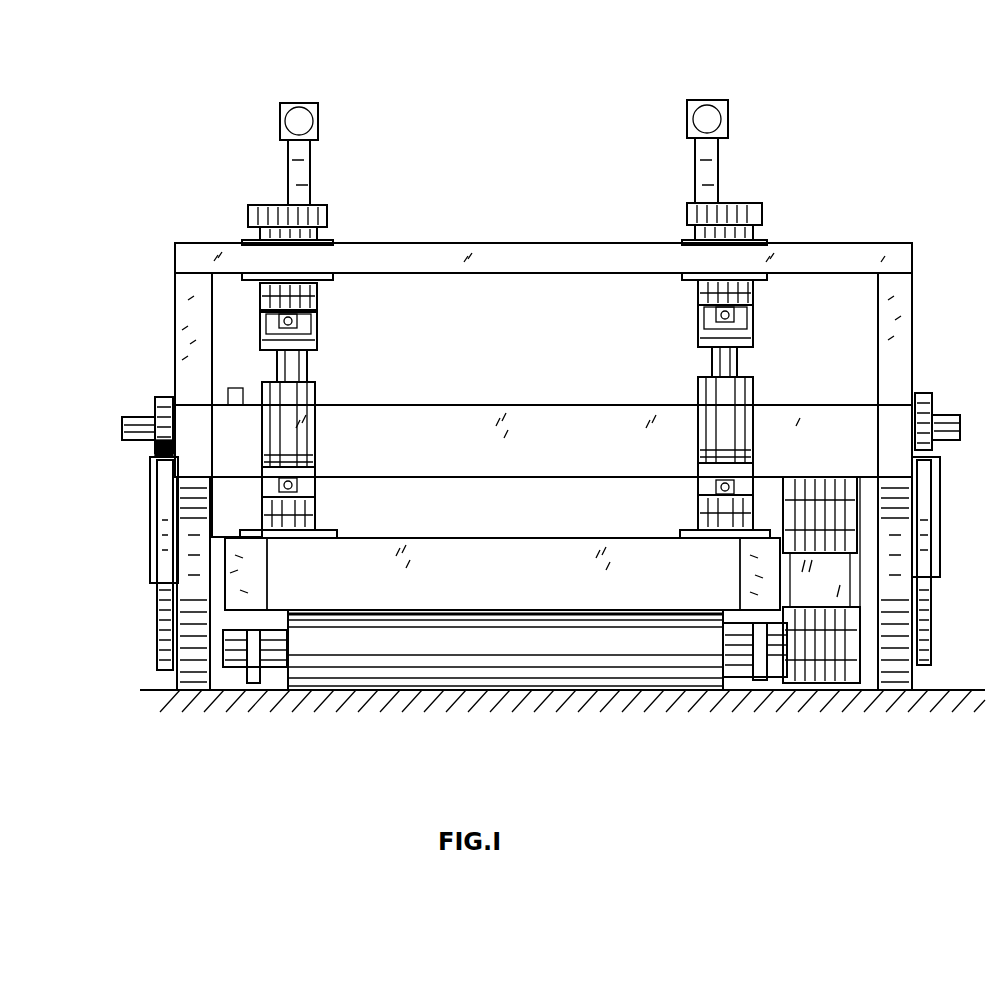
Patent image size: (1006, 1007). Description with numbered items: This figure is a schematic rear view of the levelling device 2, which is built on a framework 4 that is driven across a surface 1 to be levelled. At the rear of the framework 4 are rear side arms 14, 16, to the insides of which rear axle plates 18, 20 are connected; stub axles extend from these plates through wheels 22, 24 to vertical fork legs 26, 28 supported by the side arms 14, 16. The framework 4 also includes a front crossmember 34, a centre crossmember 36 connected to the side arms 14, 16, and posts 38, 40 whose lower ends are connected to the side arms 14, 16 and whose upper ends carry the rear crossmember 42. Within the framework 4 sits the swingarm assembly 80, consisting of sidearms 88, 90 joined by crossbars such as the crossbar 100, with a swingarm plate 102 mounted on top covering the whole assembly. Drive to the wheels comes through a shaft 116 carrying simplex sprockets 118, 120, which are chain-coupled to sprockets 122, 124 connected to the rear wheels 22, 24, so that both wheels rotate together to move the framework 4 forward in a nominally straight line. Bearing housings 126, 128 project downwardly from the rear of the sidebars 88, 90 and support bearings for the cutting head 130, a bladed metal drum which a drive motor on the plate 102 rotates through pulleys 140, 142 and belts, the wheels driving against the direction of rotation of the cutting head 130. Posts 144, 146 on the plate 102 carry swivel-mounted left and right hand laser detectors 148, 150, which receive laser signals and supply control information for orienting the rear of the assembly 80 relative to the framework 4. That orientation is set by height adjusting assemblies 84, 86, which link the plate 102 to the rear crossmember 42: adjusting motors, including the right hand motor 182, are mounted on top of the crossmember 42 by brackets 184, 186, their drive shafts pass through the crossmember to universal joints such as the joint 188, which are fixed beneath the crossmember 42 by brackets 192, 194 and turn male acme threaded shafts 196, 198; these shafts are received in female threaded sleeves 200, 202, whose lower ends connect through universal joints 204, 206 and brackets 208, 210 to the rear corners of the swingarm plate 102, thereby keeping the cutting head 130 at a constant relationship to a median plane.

The surface 1 is at (157, 695).
The levelling device 2 is at (458, 86).
The framework 4 is at (524, 166).
The rear side arm 14 is at (160, 455).
The rear side arm 16 is at (930, 440).
The rear axle plate 18 is at (226, 528).
The rear axle plate 20 is at (860, 480).
The wheel 22 is at (175, 662).
The wheel 24 is at (912, 670).
The vertical fork leg 26 is at (148, 520).
The vertical fork leg 28 is at (940, 520).
The front crossmember 34 is at (915, 625).
The centre crossmember 36 is at (478, 401).
The post 38 is at (175, 304).
The post 40 is at (912, 306).
The rear crossmember 42 is at (912, 255).
The swingarm assembly 80 is at (437, 492).
The height adjusting assembly 84 is at (410, 313).
The height adjusting assembly 86 is at (598, 309).
The sidearm 88 is at (267, 583).
The sidearm 90 is at (740, 581).
The crossbar 100 is at (540, 580).
The swingarm plate 102 is at (527, 538).
The shaft 116 is at (122, 430).
The simplex sprocket 118 is at (155, 405).
The simplex sprocket 120 is at (930, 410).
The sprocket 122 is at (160, 614).
The sprocket 124 is at (930, 598).
The bearing housing 126 is at (242, 690).
The bearing housing 128 is at (734, 690).
The cutting head 130 is at (512, 708).
The pulley 140 is at (820, 580).
The pulley 142 is at (795, 690).
The post 144 is at (315, 175).
The post 146 is at (695, 152).
The left hand laser detector 148 is at (320, 123).
The right hand laser detector 150 is at (685, 118).
The right hand adjusting motor 182 is at (327, 212).
The bracket 184 is at (262, 235).
The bracket 186 is at (755, 230).
The universal joint 188 is at (320, 328).
The bracket 192 is at (320, 290).
The bracket 194 is at (695, 300).
The male acme threaded shaft 196 is at (315, 371).
The male acme threaded shaft 198 is at (710, 366).
The female threaded sleeve 200 is at (315, 430).
The female threaded sleeve 202 is at (755, 395).
The universal joint 204 is at (317, 484).
The universal joint 206 is at (676, 484).
The bracket 208 is at (317, 510).
The bracket 210 is at (685, 516).